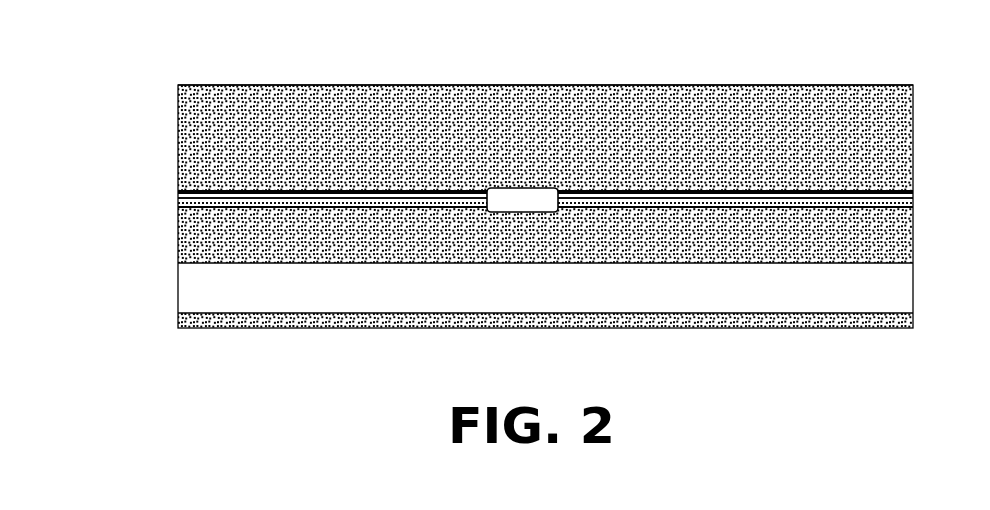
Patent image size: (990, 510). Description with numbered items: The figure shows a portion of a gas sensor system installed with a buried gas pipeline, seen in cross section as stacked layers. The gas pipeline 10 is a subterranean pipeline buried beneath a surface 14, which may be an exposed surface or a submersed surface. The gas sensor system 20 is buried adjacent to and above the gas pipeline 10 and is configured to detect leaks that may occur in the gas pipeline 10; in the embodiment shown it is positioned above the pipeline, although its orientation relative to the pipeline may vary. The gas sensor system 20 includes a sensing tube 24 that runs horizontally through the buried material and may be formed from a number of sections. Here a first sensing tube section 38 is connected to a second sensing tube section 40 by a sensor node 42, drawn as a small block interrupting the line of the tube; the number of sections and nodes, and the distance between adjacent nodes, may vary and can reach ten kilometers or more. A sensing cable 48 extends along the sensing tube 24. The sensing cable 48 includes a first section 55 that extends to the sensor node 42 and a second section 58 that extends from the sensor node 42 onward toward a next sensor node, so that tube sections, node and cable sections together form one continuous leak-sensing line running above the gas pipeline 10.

The gas pipeline 10 is at (630, 334).
The surface 14 is at (700, 85).
The gas sensor system 20 is at (195, 229).
The sensing tube 24 is at (658, 220).
The first sensing tube section 38 is at (267, 215).
The second sensing tube section 40 is at (826, 218).
The sensor node 42 is at (540, 236).
The sensing cable 48 is at (369, 219).
The first section 55 is at (178, 192).
The second section 58 is at (880, 192).